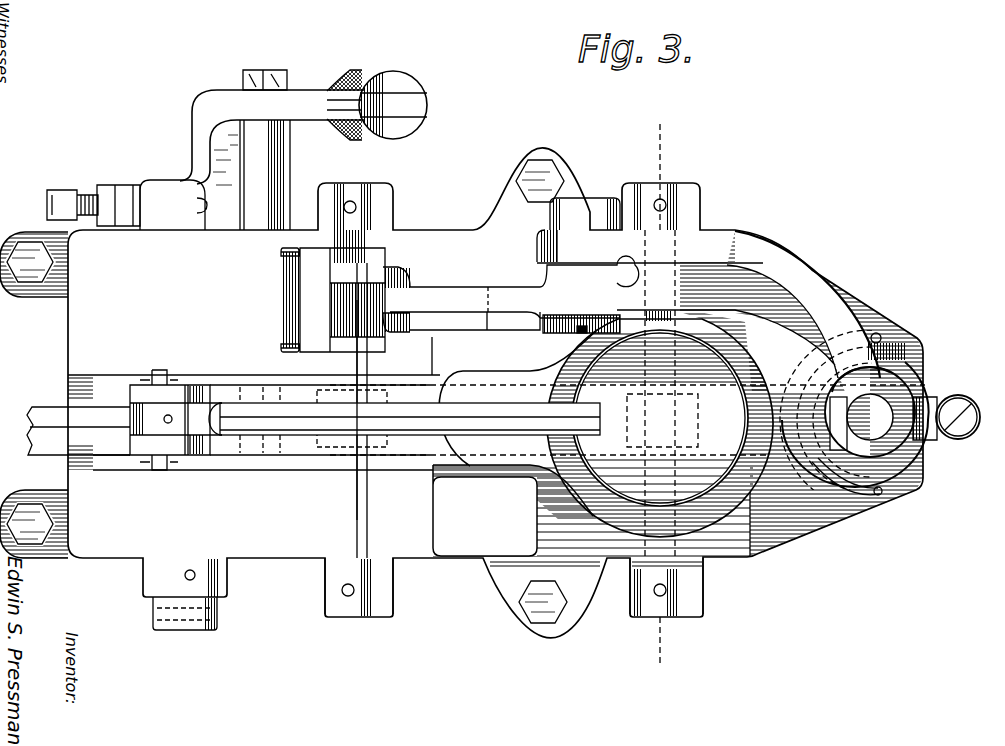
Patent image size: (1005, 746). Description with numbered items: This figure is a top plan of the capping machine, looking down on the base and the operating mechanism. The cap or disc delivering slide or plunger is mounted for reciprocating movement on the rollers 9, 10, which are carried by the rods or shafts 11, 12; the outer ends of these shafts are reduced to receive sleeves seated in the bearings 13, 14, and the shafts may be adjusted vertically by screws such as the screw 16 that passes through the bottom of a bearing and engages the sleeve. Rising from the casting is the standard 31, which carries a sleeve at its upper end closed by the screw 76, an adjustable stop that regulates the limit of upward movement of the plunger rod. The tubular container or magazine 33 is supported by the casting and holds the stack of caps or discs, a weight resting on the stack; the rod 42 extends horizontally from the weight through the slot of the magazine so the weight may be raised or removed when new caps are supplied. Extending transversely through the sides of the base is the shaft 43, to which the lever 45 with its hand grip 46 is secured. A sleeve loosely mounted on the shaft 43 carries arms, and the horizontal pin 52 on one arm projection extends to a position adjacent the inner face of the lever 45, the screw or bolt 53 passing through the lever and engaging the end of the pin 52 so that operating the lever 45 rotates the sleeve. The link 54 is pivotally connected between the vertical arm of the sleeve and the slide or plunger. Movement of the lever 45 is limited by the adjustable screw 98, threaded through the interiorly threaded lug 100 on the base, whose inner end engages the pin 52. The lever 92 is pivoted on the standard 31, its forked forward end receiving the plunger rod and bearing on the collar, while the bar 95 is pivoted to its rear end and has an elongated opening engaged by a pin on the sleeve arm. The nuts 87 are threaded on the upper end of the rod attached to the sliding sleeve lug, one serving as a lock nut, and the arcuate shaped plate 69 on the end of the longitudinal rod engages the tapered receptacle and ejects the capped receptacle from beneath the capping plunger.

The roller 9 is at (390, 398).
The roller 10 is at (698, 424).
The rod or shaft 11 is at (372, 381).
The rod or shaft 12 is at (640, 590).
The bearing 13 is at (380, 597).
The bearing 14 is at (697, 593).
The screw 16 is at (663, 394).
The standard 31 is at (818, 288).
The container or magazine 33 is at (598, 351).
The rod 42 is at (478, 416).
The shaft 43 is at (190, 463).
The lever 45 is at (298, 96).
The hand grip 46 is at (380, 72).
The pin 52 is at (290, 192).
The screw or bolt 53 is at (272, 70).
The link 54 is at (176, 420).
The arcuate shaped plate 69 is at (878, 333).
The screw 76 is at (858, 430).
The nuts 87 is at (968, 406).
The lever 92 is at (497, 292).
The bar 95 is at (282, 305).
The adjustable screw 98 is at (78, 200).
The interiorly threaded lug 100 is at (168, 207).